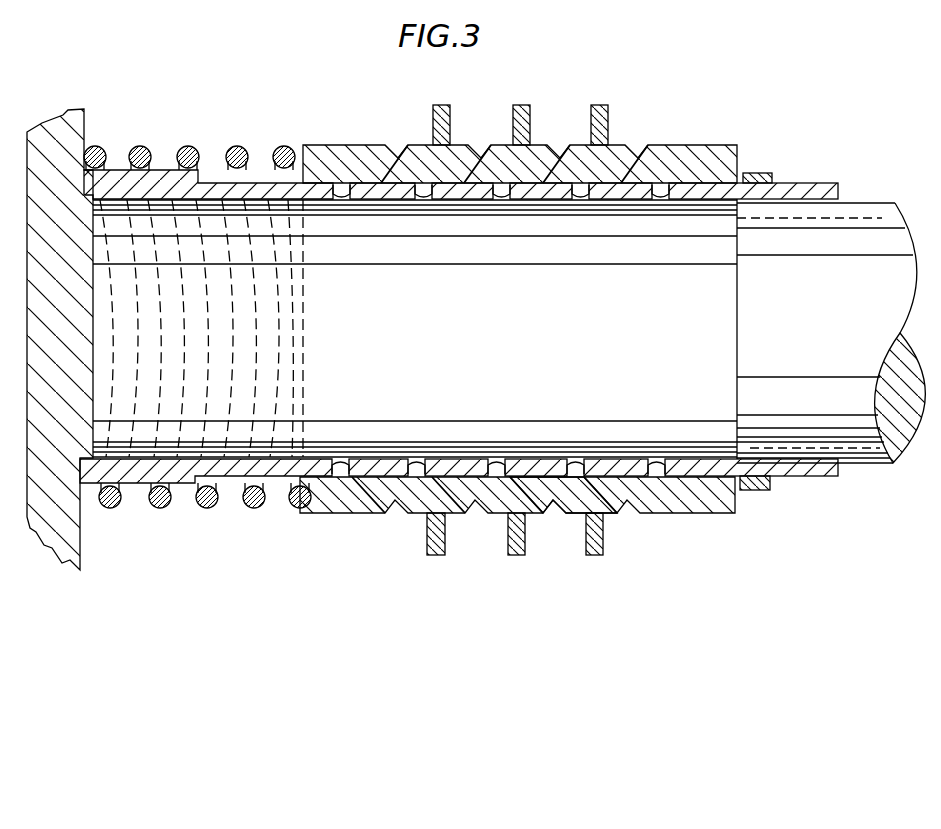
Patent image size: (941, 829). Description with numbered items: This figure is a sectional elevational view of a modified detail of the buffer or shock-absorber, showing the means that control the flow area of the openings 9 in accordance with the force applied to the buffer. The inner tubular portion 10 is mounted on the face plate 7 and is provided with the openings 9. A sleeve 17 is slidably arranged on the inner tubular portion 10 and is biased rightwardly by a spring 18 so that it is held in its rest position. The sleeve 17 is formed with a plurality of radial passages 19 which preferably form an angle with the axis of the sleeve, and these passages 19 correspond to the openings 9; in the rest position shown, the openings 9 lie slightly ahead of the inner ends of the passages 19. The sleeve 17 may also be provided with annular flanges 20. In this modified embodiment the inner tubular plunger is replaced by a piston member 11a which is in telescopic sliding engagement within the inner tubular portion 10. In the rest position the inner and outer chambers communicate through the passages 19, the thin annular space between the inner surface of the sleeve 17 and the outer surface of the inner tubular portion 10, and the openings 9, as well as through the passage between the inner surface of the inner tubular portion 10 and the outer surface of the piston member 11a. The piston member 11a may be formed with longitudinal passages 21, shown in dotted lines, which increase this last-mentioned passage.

The face plate 7 is at (53, 527).
The spring 18 is at (163, 505).
The piston member 11a is at (763, 318).
The longitudinal passages 21 is at (838, 218).
The inner tubular portion 10 is at (538, 470).
The openings 9 is at (347, 197).
The radial passages 19 is at (392, 503).
The sleeve 17 is at (577, 505).
The annular flanges 20 is at (510, 553).